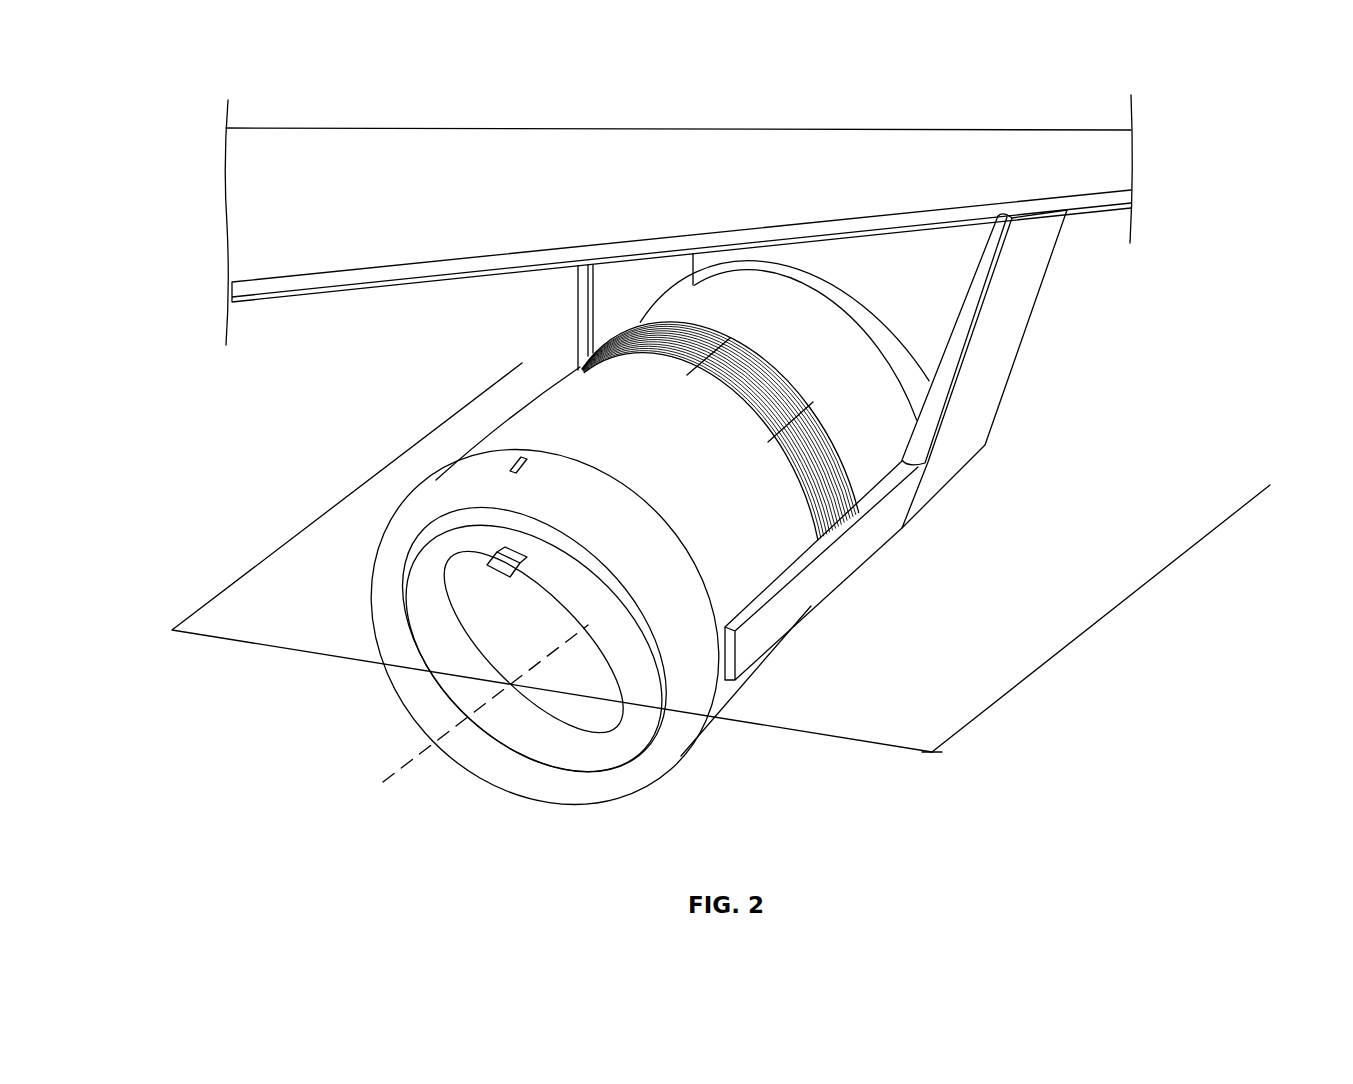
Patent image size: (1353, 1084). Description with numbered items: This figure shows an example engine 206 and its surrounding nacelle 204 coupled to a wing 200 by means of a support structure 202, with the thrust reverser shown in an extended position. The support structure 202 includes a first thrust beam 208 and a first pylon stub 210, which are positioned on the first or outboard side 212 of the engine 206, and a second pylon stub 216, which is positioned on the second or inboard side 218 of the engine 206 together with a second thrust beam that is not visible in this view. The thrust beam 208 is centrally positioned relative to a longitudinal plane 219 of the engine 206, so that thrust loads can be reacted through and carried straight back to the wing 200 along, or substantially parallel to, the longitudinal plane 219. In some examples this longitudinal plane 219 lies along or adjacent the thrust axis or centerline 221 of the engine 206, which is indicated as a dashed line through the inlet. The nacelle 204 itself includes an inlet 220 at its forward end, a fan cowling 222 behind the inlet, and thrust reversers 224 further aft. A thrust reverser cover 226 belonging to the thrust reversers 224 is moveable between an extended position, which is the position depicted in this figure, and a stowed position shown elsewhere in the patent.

The wing 200 is at (292, 280).
The support structure 202 is at (1027, 432).
The nacelle 204 is at (797, 656).
The engine 206 is at (556, 642).
The first thrust beam 208 is at (777, 617).
The first pylon stub 210 is at (1013, 317).
The outboard side 212 is at (974, 648).
The second pylon stub 216 is at (585, 333).
The inboard side 218 is at (345, 472).
The longitudinal plane 219 is at (903, 752).
The inlet 220 is at (632, 775).
The centerline 221 is at (397, 772).
The fan cowling 222 is at (577, 400).
The thrust reversers 224 is at (838, 512).
The thrust reverser cover 226 is at (867, 328).